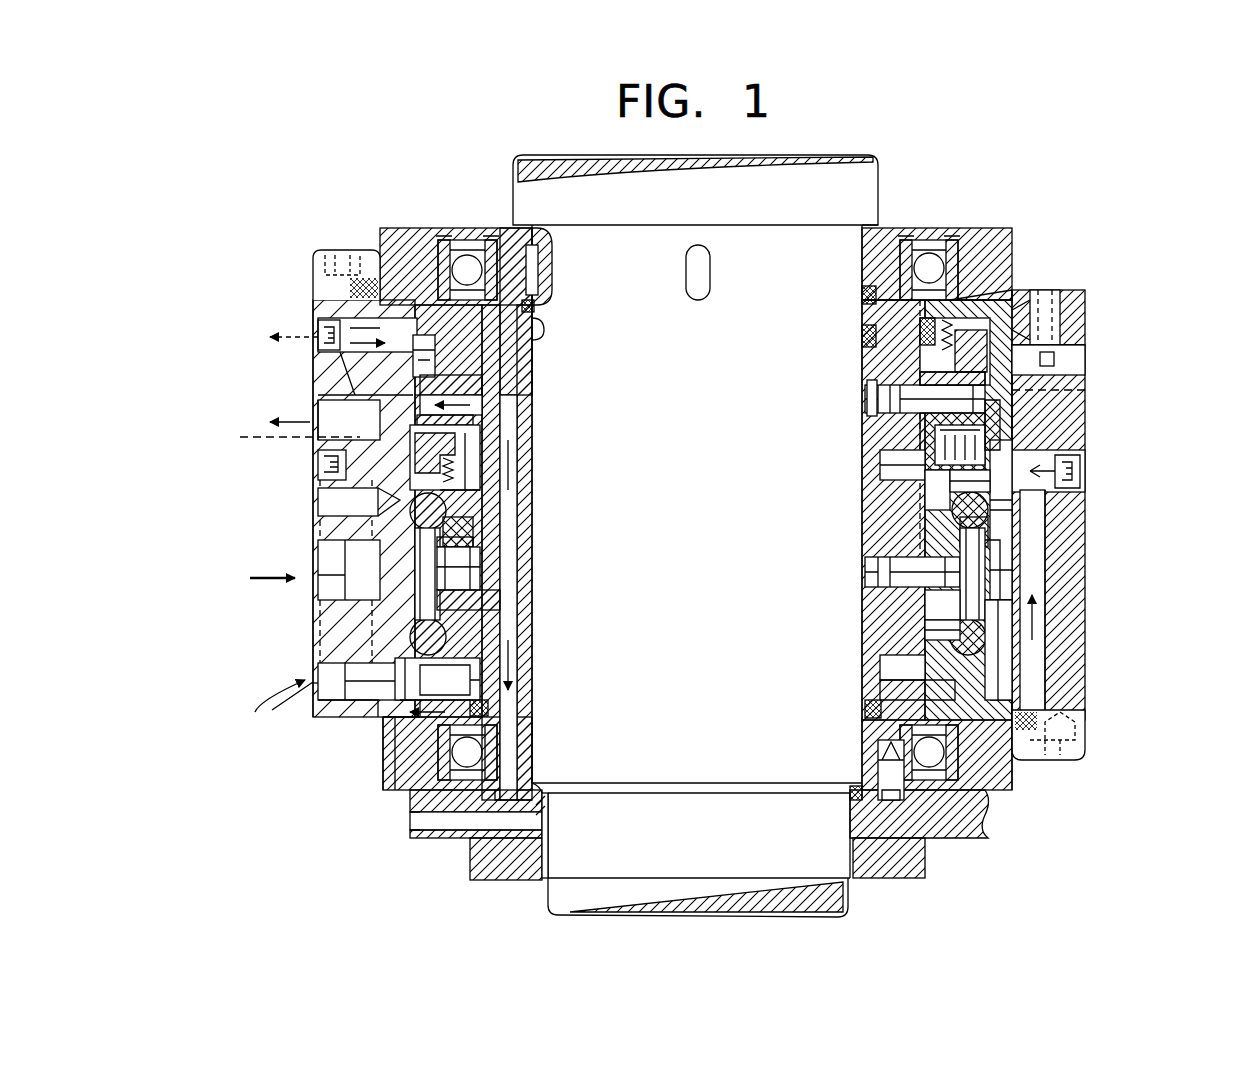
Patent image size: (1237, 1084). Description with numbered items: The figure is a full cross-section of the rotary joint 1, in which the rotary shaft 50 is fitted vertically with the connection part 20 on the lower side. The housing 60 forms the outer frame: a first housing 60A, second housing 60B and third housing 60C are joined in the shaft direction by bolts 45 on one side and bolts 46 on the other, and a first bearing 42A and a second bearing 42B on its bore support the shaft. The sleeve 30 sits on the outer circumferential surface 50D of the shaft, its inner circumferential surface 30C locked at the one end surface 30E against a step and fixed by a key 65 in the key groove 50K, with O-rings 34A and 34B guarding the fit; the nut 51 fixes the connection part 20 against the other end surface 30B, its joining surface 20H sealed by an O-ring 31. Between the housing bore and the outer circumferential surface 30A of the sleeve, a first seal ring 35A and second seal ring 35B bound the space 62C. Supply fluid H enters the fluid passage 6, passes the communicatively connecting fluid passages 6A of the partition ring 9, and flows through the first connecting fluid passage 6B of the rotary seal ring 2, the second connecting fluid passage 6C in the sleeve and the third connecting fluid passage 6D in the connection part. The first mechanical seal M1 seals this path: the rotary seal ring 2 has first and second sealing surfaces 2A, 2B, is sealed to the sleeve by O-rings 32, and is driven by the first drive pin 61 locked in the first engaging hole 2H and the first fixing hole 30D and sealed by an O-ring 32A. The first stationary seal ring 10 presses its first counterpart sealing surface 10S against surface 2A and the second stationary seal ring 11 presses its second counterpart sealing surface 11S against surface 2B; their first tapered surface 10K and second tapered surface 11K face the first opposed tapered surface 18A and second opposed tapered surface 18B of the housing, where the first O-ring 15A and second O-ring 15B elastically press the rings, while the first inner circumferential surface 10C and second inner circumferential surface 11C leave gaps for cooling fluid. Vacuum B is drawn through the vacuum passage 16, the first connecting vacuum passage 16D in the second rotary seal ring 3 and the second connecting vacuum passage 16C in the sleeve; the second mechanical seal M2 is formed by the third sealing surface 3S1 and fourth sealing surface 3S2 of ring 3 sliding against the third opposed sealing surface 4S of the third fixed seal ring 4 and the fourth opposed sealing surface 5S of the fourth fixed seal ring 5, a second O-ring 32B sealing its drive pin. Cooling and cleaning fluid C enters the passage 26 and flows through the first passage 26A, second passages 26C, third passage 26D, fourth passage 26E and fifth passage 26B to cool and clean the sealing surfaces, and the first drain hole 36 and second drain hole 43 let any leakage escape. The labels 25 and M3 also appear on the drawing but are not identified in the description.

The rotary joint 1 is at (975, 212).
The rotary seal ring 2 is at (985, 555).
The first sealing surface 2A is at (500, 505).
The second sealing surface 2B is at (448, 627).
The first engaging hole 2H is at (880, 556).
The second rotary seal ring 3 is at (885, 395).
The third sealing surface 3S1 is at (878, 360).
The fourth sealing surface 3S2 is at (920, 420).
The third fixed seal ring 4 is at (410, 332).
The third opposed sealing surface 4S is at (350, 393).
The fourth fixed seal ring 5 is at (932, 440).
The fourth opposed sealing surface 5S is at (1065, 400).
The fluid passage 6 is at (305, 590).
The communicatively connecting fluid passage 6A is at (360, 560).
The first connecting fluid passage 6B is at (480, 535).
The second connecting fluid passage 6C is at (505, 620).
The third connecting fluid passage 6D is at (370, 826).
The partition ring 9 is at (1040, 530).
The first stationary seal ring 10 is at (882, 490).
The first inner circumferential surface 10C is at (882, 515).
The first tapered surface 10K is at (320, 463).
The first counterpart sealing surface 10S is at (470, 550).
The second stationary seal ring 11 is at (880, 670).
The second inner circumferential surface 11C is at (880, 640).
The second tapered surface 11K is at (385, 730).
The second counterpart sealing surface 11S is at (482, 598).
The first O-ring 15A is at (398, 500).
The second O-ring 15B is at (400, 642).
The vacuum passage 16 is at (320, 416).
The second connecting vacuum passage 16C is at (534, 462).
The first connecting vacuum passage 16D is at (532, 395).
The first opposed tapered surface 18A is at (880, 470).
The second opposed tapered surface 18B is at (882, 700).
The connection part 20 is at (446, 840).
The joining surface 20H is at (525, 785).
The bolt 25 is at (890, 798).
The passage for cleaning and cooling 26 is at (305, 692).
The first passage 26A is at (485, 690).
The fifth passage 26B is at (330, 335).
The second passages 26C is at (1040, 520).
The third passage 26D is at (1080, 472).
The fourth passage 26E is at (273, 437).
The sleeve 30 is at (537, 350).
The outer circumferential surface 30A is at (985, 720).
The other end surface 30B is at (945, 836).
The inner circumferential surface 30C is at (534, 435).
The first fixing hole 30D is at (900, 630).
The one end surface 30E is at (505, 228).
The O-ring 31 is at (548, 818).
The O-rings 32 is at (482, 590).
The O-ring 32A is at (885, 565).
The second O-ring 32B is at (870, 392).
The O-ring 34A is at (862, 296).
The O-ring 34B is at (852, 800).
The first seal ring 35A is at (534, 312).
The second seal ring 35B is at (482, 716).
The first drain hole 36 is at (1085, 320).
The first bearing 42A is at (960, 265).
The second bearing 42B is at (440, 757).
The second drain hole 43 is at (375, 742).
The bolts 45 is at (343, 250).
The bolts 46 is at (1085, 740).
The rotary shaft 50 is at (848, 188).
The outer circumferential surface 50D is at (534, 335).
The key groove 50K is at (689, 272).
The nut 51 is at (510, 860).
The housing 60 is at (420, 228).
The first housing 60A is at (1010, 292).
The second housing 60B is at (1070, 428).
The third housing 60C is at (1068, 625).
The first drive pin 61 is at (890, 585).
The space 62C is at (1012, 585).
The key 65 is at (538, 262).
The vacuum B is at (279, 422).
The cooling and cleaning fluid C is at (215, 712).
The supply fluid H is at (255, 578).
The first mechanical seal M1 is at (305, 682).
The second mechanical seal M2 is at (534, 400).
The third mechanism M3 is at (1085, 360).